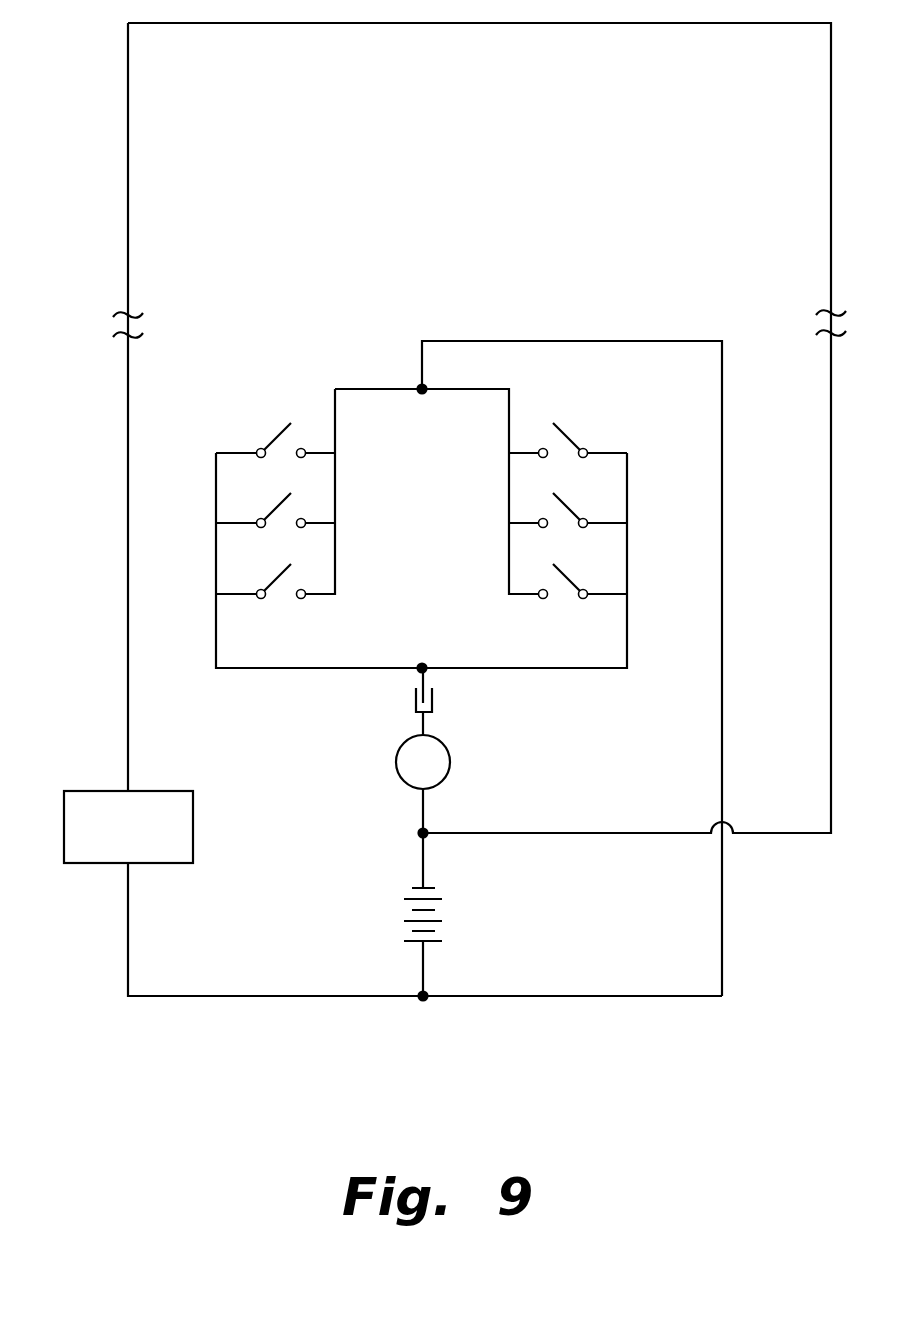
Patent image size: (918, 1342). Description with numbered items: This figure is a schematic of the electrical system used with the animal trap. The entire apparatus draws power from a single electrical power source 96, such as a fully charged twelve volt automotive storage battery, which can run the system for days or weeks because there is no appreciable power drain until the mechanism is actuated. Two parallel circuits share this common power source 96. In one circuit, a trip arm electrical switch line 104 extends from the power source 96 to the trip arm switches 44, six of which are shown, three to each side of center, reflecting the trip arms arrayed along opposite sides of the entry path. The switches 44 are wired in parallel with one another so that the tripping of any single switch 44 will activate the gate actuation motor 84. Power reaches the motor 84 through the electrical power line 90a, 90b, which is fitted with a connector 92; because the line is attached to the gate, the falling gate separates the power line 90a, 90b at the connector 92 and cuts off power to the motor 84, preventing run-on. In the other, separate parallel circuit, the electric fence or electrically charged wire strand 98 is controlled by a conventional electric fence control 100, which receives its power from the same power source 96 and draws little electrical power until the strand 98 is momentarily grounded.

The electric fence or electrically charged wire strand 98 is at (524, 23).
The trip arm electrical switch line 104 is at (722, 395).
The trip arm electrical switch 44 is at (261, 457).
The connector 92 is at (415, 700).
The electrical power line 90a is at (424, 677).
The electrical power line 90b is at (425, 724).
The motor 84 is at (400, 770).
The electrical power source 96 is at (404, 899).
The electric fence control 100 is at (80, 865).